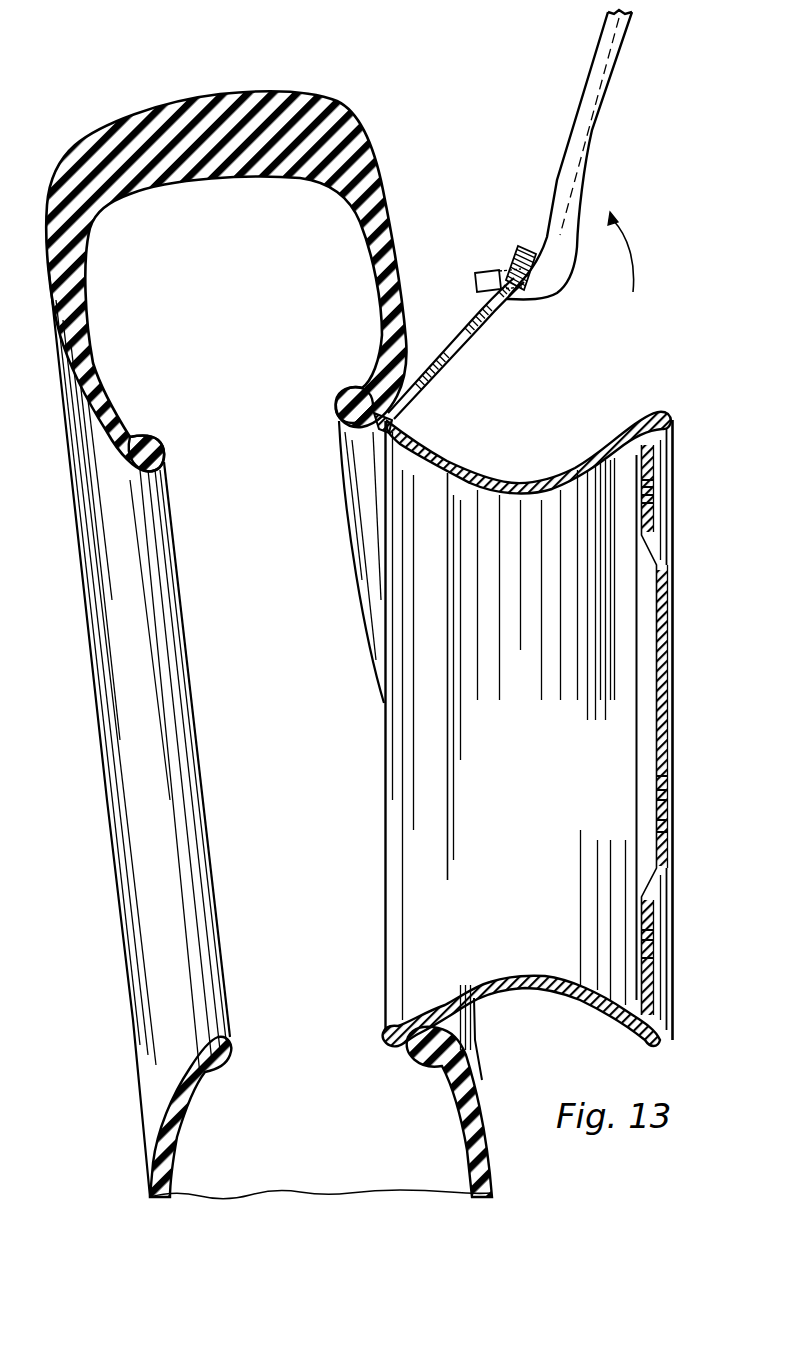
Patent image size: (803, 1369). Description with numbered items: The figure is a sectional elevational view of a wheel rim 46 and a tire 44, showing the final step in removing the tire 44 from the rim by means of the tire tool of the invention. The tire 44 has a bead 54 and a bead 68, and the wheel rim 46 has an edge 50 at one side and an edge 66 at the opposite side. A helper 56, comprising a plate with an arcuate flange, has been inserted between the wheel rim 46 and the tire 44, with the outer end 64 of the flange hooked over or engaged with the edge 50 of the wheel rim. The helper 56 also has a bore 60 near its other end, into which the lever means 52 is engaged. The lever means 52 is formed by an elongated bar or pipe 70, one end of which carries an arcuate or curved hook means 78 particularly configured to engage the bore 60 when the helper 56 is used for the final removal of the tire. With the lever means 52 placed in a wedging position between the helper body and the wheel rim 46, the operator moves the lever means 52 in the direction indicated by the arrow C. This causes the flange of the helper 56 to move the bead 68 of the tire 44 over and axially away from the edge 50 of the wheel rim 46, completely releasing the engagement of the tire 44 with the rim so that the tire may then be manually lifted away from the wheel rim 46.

The tire 44 is at (376, 150).
The wheel rim 46 is at (557, 473).
The edge of the wheel rim 50 is at (408, 416).
The lever means 52 is at (626, 50).
The bead 54 is at (158, 438).
The helper 56 is at (459, 349).
The bore 60 is at (506, 279).
The outer end 64 is at (374, 432).
The edge of the rim 66 is at (664, 412).
The bead 68 is at (350, 390).
The bar or pipe 70 is at (583, 110).
The hook means 78 is at (475, 281).
The arrow C is at (637, 232).